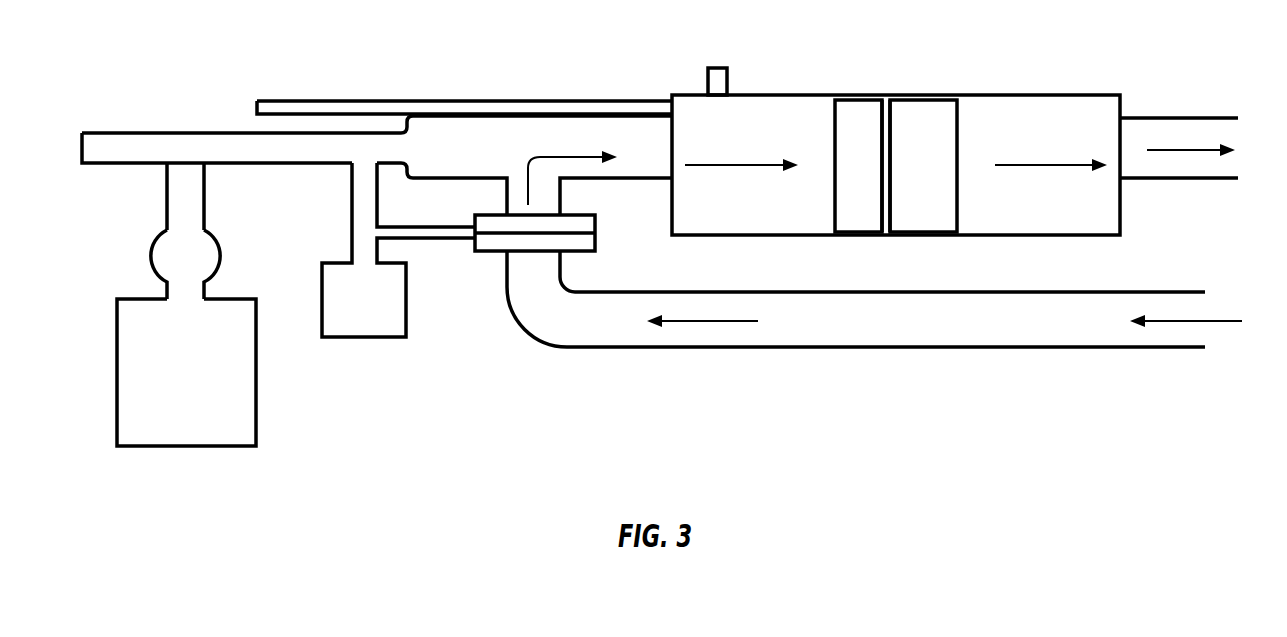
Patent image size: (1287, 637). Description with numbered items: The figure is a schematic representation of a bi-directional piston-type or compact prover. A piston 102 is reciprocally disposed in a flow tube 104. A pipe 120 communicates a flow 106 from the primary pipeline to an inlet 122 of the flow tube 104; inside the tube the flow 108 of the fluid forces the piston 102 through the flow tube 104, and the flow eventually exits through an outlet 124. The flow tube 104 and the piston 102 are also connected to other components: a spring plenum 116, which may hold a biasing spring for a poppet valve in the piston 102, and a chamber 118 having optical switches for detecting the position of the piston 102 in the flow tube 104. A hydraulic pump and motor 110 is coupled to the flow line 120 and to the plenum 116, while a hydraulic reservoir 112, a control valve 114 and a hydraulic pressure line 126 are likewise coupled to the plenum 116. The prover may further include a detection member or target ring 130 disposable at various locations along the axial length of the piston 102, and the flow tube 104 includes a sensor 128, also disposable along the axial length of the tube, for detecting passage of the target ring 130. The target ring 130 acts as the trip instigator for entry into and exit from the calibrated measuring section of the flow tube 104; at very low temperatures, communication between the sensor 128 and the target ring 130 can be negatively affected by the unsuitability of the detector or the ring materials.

The piston 102 is at (862, 107).
The flow tube 104 is at (995, 95).
The flow 106 is at (1205, 321).
The flow 108 is at (773, 163).
The hydraulic pump and motor 110 is at (334, 290).
The hydraulic reservoir 112 is at (134, 341).
The control valve 114 is at (166, 257).
The spring plenum 116 is at (122, 132).
The chamber 118 is at (278, 101).
The pipe 120 is at (887, 347).
The inlet 122 is at (632, 179).
The outlet 124 is at (1200, 118).
The hydraulic pressure line 126 is at (181, 207).
The sensor 128 is at (712, 68).
The target ring 130 is at (893, 162).